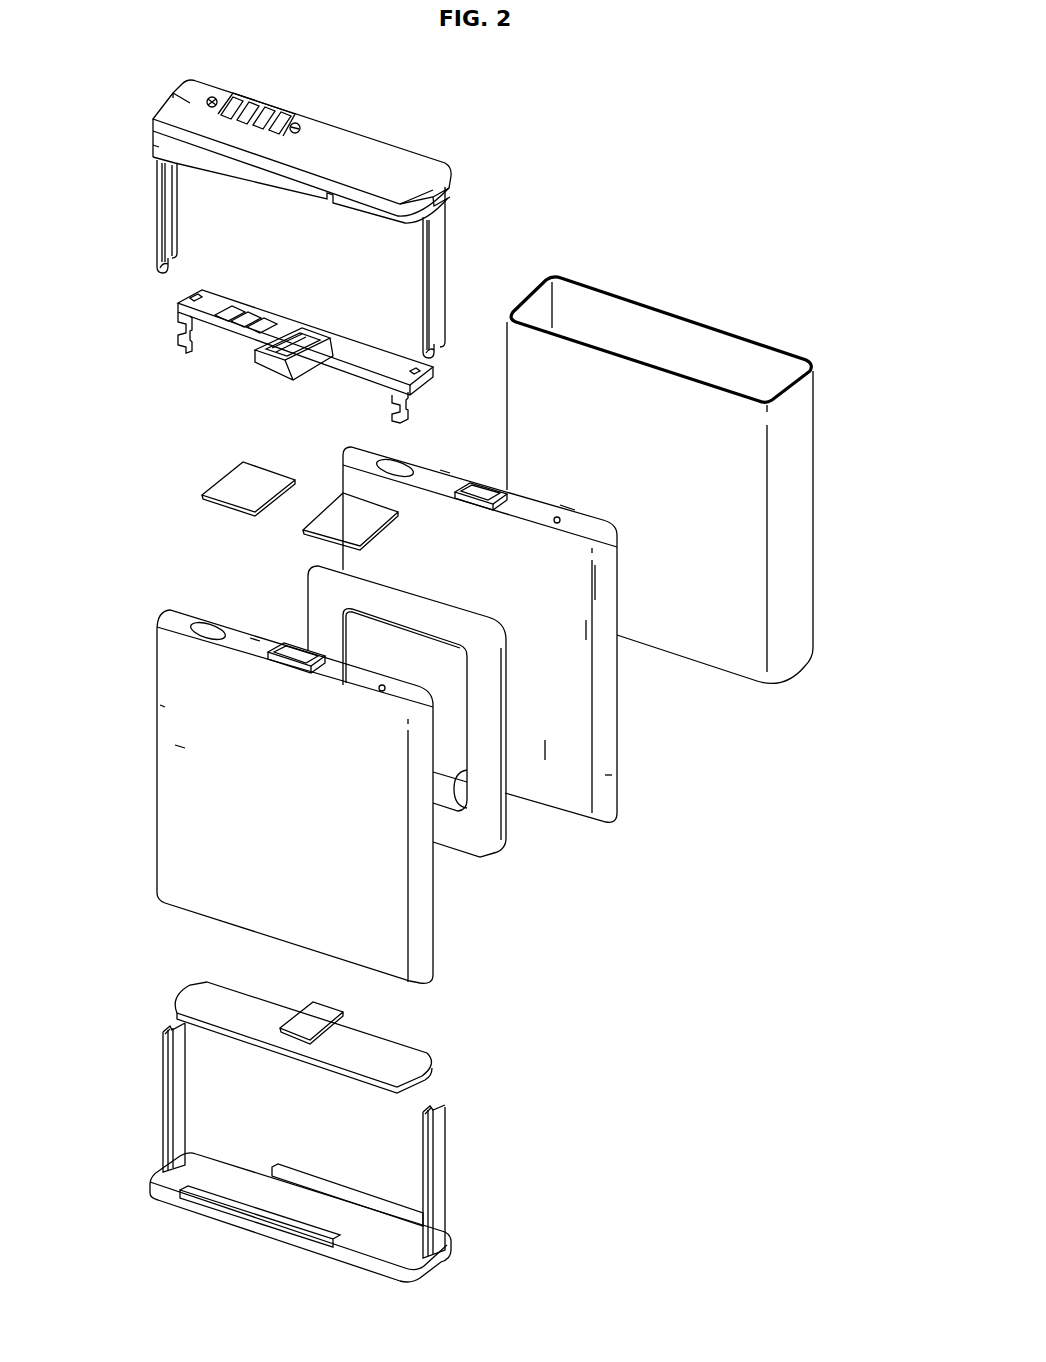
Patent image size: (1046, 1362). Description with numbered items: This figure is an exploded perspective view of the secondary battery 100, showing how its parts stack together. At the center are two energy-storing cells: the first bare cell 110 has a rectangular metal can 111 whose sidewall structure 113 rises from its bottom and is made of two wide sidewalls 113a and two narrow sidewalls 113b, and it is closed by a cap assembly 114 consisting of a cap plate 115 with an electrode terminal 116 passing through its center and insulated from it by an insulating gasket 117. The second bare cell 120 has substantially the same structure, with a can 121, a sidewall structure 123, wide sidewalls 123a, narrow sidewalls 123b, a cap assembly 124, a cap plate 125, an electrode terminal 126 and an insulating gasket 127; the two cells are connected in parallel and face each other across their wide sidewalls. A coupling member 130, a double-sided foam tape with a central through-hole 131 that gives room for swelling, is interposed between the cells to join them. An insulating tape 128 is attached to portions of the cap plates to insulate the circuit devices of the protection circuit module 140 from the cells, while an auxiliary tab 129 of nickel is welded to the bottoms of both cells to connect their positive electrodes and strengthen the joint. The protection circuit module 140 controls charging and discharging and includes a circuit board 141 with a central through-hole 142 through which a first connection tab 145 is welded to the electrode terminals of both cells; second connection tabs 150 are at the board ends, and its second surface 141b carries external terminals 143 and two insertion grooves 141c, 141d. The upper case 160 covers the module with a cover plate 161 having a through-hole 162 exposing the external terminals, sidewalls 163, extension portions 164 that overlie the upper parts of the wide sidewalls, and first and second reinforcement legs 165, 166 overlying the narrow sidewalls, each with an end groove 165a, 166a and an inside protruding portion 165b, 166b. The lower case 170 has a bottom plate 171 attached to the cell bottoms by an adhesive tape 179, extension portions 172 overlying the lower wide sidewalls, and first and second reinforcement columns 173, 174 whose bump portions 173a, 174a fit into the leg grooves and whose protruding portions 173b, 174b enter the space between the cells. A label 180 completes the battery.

The secondary battery 100 is at (633, 109).
The first bare cell 110 is at (287, 768).
The can 111 is at (157, 800).
The sidewall structure 113 is at (160, 713).
The wide sidewalls 113a is at (180, 750).
The narrow sidewalls 113b is at (430, 912).
The cap assembly 114 is at (255, 640).
The cap plate 115 is at (180, 615).
The electrode terminal 116 is at (268, 657).
The insulating gasket 117 is at (292, 672).
The second bare cell 120 is at (525, 648).
The can 121 is at (588, 740).
The second cell body 123 is at (578, 760).
The wide sidewalls 123a is at (548, 768).
The narrow sidewalls 123b is at (608, 785).
The second cell top surface 124 is at (557, 518).
The cap plate 125 is at (445, 481).
The electrode terminal 126 is at (482, 492).
The second terminal plate 127 is at (506, 493).
The insulating tape 128 is at (340, 490).
The auxiliary tab 129 is at (312, 1008).
The coupling member 130 is at (380, 722).
The through-hole 131 is at (470, 775).
The protection circuit module 140 is at (288, 327).
The circuit board 141 is at (335, 319).
The second surface 141b is at (430, 380).
The insertion groove 141c is at (300, 338).
The insertion groove 141d is at (197, 297).
The through-hole 142 is at (300, 342).
The external terminals 143 is at (230, 308).
The first connection tab 145 is at (313, 337).
The second connection tab 150 is at (176, 356).
The upper case 160 is at (300, 207).
The cover plate 161 is at (190, 115).
The through-hole 162 is at (262, 103).
The sidewalls 163 is at (160, 133).
The extension portions 164 is at (160, 152).
The first reinforcement leg 165 is at (421, 272).
The groove 165a is at (447, 348).
The first protruding portion 165b is at (423, 250).
The second reinforcement leg 166 is at (162, 217).
The groove 166a is at (163, 268).
The second protruding portion 166b is at (174, 212).
The lower case 170 is at (307, 1141).
The bottom plate 171 is at (185, 1180).
The extension portions 172 is at (203, 1212).
The first reinforcement column 173 is at (389, 1162).
The bump portion 173a is at (440, 1110).
The first protruding portion 173b is at (425, 1120).
The second reinforcement column 174 is at (175, 1086).
The bump portion 174a is at (168, 1030).
The second protruding portion 174b is at (178, 1090).
The adhesive tape 179 is at (407, 1055).
The label 180 is at (795, 482).